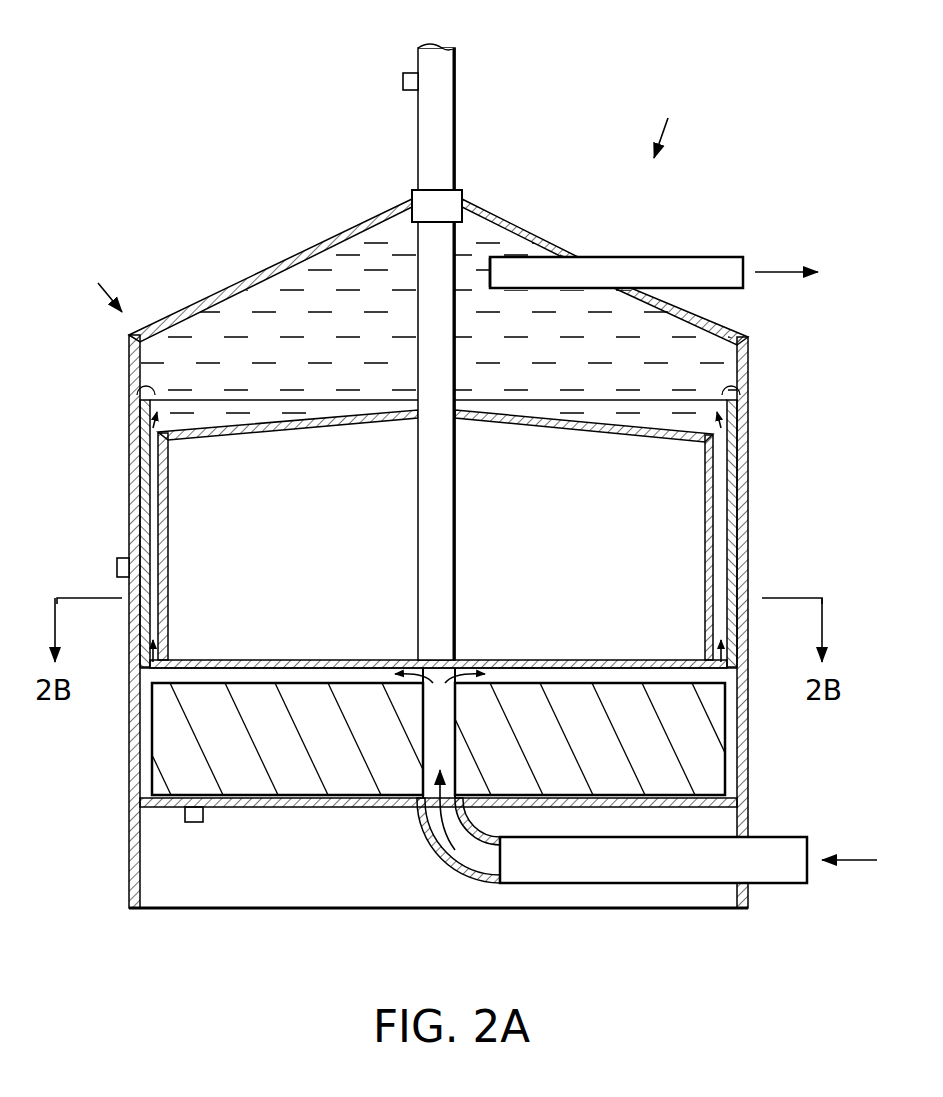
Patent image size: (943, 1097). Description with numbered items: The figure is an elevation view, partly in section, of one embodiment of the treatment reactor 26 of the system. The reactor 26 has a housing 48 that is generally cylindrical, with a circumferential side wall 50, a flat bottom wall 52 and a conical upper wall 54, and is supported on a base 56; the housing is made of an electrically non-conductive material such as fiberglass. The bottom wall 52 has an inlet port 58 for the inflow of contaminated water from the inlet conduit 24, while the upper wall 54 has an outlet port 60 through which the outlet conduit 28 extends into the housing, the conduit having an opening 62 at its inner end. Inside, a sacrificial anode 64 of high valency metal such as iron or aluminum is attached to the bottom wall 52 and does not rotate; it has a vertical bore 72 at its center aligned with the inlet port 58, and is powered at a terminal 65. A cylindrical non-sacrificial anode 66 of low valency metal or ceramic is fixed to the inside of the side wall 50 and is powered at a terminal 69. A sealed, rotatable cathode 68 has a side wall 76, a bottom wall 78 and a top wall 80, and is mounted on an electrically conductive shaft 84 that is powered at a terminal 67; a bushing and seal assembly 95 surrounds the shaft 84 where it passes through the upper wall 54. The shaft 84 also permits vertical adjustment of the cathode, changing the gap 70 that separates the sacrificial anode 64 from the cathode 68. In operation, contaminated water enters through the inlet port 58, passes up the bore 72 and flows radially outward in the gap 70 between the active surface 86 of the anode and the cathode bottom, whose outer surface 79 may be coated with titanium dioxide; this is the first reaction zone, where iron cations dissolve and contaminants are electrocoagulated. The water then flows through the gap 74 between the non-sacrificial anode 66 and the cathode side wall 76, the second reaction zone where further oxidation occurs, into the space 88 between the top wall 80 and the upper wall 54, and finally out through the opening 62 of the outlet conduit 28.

The inlet conduit 24 is at (787, 845).
The reactor 26 is at (671, 121).
The outlet conduit 28 is at (716, 266).
The housing 48 is at (93, 283).
The side wall 50 is at (748, 357).
The bottom wall 52 is at (300, 807).
The upper wall 54 is at (272, 268).
The base 56 is at (128, 845).
The inlet port 58 is at (420, 850).
The outlet port 60 is at (580, 258).
The opening 62 is at (490, 268).
The sacrificial anode 64 is at (700, 733).
The terminal 65 is at (195, 823).
The non-sacrificial anode 66 is at (137, 390).
The terminal 67 is at (403, 80).
The cathode 68 is at (705, 577).
The terminal 69 is at (118, 565).
The gap 70 is at (598, 676).
The vertical bore 72 is at (436, 735).
The gap 74 is at (153, 470).
The side wall 76 is at (166, 540).
The bottom wall 78 is at (300, 660).
The outer surface 79 is at (522, 668).
The top wall 80 is at (570, 425).
The shaft 84 is at (440, 100).
The active surface 86 is at (215, 662).
The space 88 is at (338, 285).
The bushing and seal assembly 95 is at (462, 203).